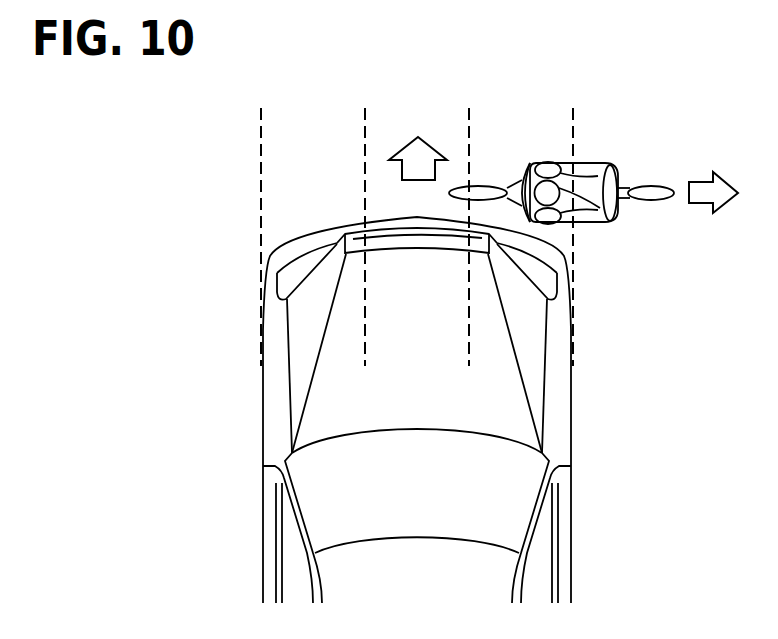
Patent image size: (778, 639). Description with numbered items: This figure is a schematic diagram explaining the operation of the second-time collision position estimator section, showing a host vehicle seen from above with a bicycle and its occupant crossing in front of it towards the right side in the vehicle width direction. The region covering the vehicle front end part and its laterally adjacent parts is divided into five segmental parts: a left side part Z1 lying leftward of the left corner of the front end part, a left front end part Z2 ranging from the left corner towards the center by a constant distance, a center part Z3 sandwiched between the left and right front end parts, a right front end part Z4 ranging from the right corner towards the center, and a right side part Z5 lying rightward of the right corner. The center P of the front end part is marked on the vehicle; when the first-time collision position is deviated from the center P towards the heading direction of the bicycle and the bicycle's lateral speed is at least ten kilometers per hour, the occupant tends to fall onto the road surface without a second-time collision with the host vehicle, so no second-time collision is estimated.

The left side part Z1 is at (261, 121).
The left front end part Z2 is at (365, 121).
The center part Z3 is at (469, 121).
The right front end part Z4 is at (573, 121).
The right side part Z5 is at (672, 121).
The center of the front end part P is at (414, 219).